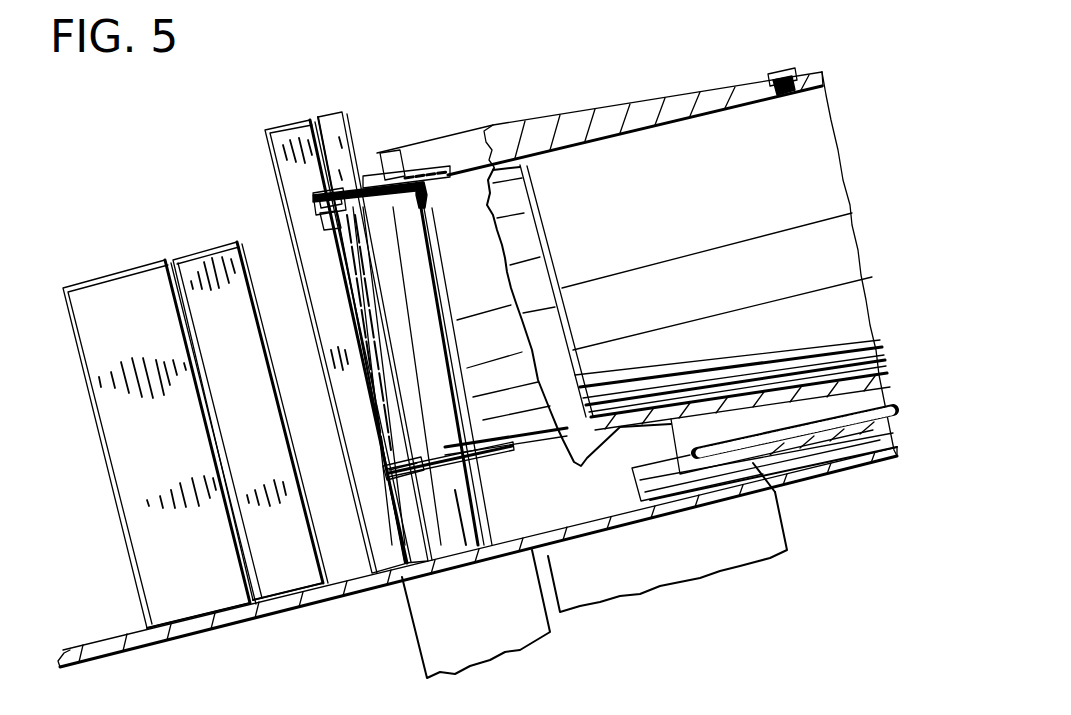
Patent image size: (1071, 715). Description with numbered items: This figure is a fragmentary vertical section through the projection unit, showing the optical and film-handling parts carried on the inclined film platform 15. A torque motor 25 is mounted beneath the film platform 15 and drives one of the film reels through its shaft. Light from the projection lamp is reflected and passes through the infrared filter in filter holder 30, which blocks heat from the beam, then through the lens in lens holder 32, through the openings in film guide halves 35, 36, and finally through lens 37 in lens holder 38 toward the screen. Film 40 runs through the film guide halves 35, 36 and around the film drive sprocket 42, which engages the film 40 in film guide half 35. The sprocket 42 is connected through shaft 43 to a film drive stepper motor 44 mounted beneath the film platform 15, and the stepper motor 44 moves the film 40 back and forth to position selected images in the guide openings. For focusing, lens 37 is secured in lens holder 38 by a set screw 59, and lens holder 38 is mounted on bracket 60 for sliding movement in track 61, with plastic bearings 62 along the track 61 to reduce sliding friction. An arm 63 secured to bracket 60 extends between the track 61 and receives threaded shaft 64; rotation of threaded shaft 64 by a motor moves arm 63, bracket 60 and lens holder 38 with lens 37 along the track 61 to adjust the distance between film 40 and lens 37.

The film platform 15 is at (233, 617).
The torque motor 25 is at (697, 566).
The filter holder 30 is at (122, 277).
The lens holder 32 is at (208, 254).
The film guide half 35 is at (296, 127).
The film guide half 36 is at (329, 113).
The lens 37 is at (668, 130).
The lens holder 38 is at (592, 131).
The film 40 is at (328, 249).
The film drive sprocket 42 is at (388, 215).
The shaft 43 is at (458, 526).
The film drive stepper motor 44 is at (512, 631).
The set screw 59 is at (777, 73).
The bracket 60 is at (690, 452).
The track 61 is at (640, 482).
The plastic bearings 62 is at (778, 509).
The arm 63 is at (850, 463).
The threaded shaft 64 is at (800, 470).